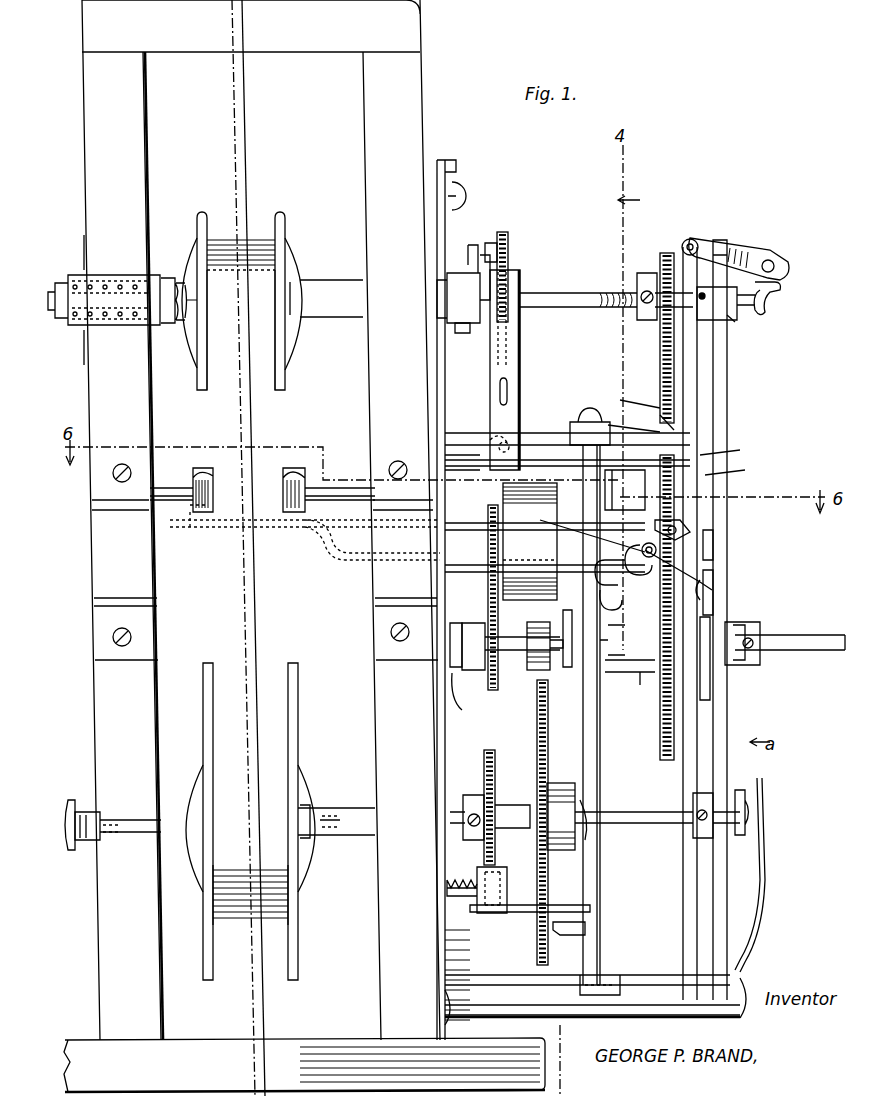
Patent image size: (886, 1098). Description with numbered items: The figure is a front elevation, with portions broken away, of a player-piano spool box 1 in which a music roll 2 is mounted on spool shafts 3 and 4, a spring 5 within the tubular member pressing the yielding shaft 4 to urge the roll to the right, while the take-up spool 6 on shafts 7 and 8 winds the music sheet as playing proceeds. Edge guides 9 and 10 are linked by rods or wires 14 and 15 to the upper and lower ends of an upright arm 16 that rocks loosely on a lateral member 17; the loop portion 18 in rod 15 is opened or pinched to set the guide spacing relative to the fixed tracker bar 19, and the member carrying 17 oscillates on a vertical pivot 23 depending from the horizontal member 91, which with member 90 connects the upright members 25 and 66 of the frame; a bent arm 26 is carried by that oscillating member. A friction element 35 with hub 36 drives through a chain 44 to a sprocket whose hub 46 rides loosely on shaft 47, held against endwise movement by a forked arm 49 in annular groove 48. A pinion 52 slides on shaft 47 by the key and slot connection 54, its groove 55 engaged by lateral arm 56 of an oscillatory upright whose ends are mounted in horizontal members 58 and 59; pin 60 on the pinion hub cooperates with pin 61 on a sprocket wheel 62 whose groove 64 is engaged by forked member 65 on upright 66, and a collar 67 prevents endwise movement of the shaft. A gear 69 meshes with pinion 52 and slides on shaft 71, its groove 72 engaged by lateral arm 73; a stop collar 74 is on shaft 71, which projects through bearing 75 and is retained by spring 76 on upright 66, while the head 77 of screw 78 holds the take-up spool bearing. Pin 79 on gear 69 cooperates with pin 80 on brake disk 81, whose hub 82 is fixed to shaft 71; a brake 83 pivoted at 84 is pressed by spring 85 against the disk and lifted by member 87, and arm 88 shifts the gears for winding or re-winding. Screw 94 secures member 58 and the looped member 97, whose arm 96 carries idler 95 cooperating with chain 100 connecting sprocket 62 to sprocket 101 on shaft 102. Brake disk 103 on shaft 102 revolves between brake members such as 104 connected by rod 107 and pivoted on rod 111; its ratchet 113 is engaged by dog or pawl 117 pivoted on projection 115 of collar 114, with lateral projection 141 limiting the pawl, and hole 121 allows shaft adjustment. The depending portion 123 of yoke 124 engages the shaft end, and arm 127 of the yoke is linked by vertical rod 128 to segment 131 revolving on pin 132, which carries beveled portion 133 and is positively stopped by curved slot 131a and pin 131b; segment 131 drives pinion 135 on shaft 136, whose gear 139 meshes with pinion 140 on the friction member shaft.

The spool box 1 is at (312, 548).
The music roll 2 is at (285, 375).
The spool shaft 3 is at (333, 320).
The spool shaft 4 is at (168, 325).
The spring 5 is at (104, 300).
The take-up spool 6 is at (298, 880).
The take-up spool shaft 7 is at (336, 808).
The take-up spool shaft 8 is at (82, 808).
The edge guide 9 is at (296, 468).
The edge guide 10 is at (193, 470).
The rod or wire 14 is at (395, 522).
The rod or wire 15 is at (352, 562).
The upright arm 16 is at (692, 530).
The lateral member 17 is at (625, 575).
The loop portion 18 is at (620, 615).
The tracker bar 19 is at (243, 566).
The vertical pivot 23 is at (690, 450).
The upright member 25 is at (440, 212).
The bent arm 26 is at (715, 585).
The friction element 35 is at (545, 541).
The hub 36 is at (503, 500).
The chain 44 is at (488, 598).
The hub 46 is at (460, 700).
The shaft 47 is at (470, 672).
The annular groove 48 is at (458, 650).
The forked arm 49 is at (470, 745).
The pinion 52 is at (532, 670).
The key and slot connection 54 is at (625, 640).
The annular groove 55 is at (548, 690).
The lateral arm 56 is at (563, 670).
The horizontal member 58 is at (580, 412).
The horizontal member 59 is at (625, 975).
The pin 60 is at (630, 675).
The pin 61 is at (655, 678).
The sprocket wheel 62 is at (660, 735).
The annular groove 64 is at (700, 690).
The forked member 65 is at (728, 680).
The upright member 66 is at (728, 400).
The collar 67 is at (752, 627).
The gear 69 is at (550, 740).
The shaft 71 is at (660, 825).
The annular groove 72 is at (585, 840).
The lateral arm 73 is at (578, 810).
The stop collar 74 is at (700, 840).
The bearing 75 is at (750, 825).
The spring 76 is at (762, 880).
The head 77 is at (72, 853).
The screw 78 is at (90, 843).
The pin 79 is at (518, 825).
The pin 80 is at (512, 805).
The brake disk 81 is at (484, 770).
The hub 82 is at (463, 808).
The brake 83 is at (490, 915).
The pivot 84 is at (507, 885).
The spring 85 is at (455, 900).
The member 87 is at (455, 925).
The arm 88 is at (585, 925).
The horizontal member 90 is at (692, 980).
The horizontal member 91 is at (545, 410).
The screw 94 is at (592, 402).
The idler 95 is at (631, 394).
The arm 96 is at (660, 405).
The looped member 97 is at (634, 417).
The chain 100 is at (700, 382).
The sprocket 101 is at (660, 250).
The shaft 102 is at (582, 290).
The brake disk 103 is at (505, 232).
The brake member 104 is at (525, 355).
The rod 107 is at (500, 390).
The rod 111 is at (490, 435).
The ratchet 113 is at (482, 325).
The collar 114 is at (447, 293).
The projection 115 is at (468, 262).
The dog or pawl 117 is at (508, 262).
The hole 121 is at (704, 300).
The depending portion 123 is at (770, 298).
The yoke 124 is at (778, 268).
The arm 127 is at (740, 258).
The vertical rod 128 is at (705, 337).
The segment 131 is at (713, 555).
The curved slot 131a is at (715, 598).
The pin 131b is at (727, 560).
The pin 132 is at (715, 590).
The beveled portion 133 is at (730, 588).
The pinion 135 is at (745, 470).
The shaft 136 is at (745, 450).
The gear 139 is at (625, 470).
The pinion 140 is at (579, 527).
The lateral projection 141 is at (508, 245).